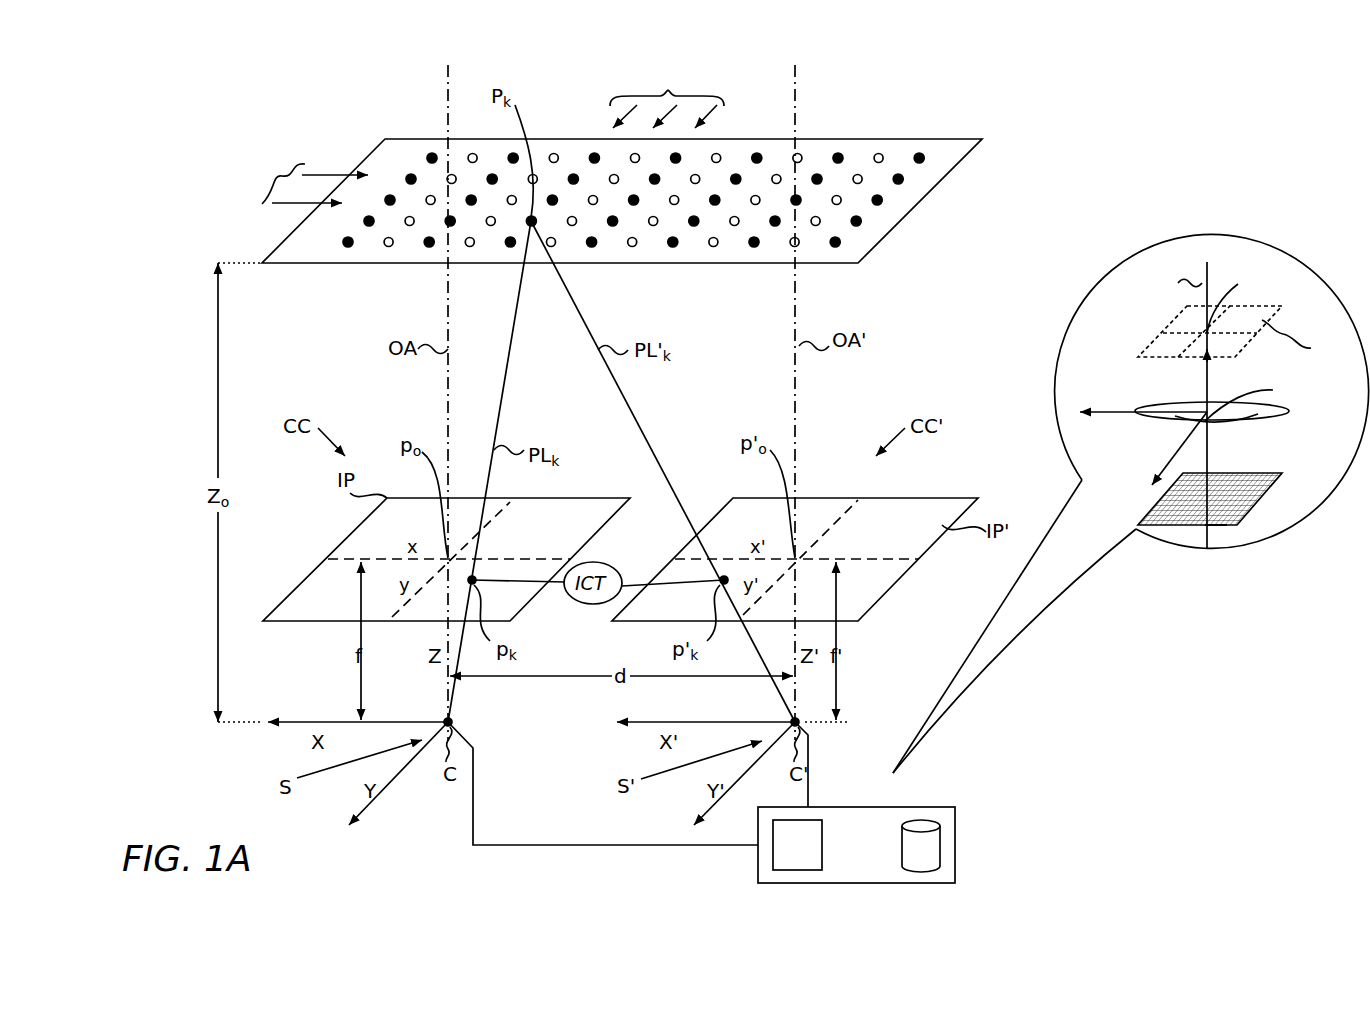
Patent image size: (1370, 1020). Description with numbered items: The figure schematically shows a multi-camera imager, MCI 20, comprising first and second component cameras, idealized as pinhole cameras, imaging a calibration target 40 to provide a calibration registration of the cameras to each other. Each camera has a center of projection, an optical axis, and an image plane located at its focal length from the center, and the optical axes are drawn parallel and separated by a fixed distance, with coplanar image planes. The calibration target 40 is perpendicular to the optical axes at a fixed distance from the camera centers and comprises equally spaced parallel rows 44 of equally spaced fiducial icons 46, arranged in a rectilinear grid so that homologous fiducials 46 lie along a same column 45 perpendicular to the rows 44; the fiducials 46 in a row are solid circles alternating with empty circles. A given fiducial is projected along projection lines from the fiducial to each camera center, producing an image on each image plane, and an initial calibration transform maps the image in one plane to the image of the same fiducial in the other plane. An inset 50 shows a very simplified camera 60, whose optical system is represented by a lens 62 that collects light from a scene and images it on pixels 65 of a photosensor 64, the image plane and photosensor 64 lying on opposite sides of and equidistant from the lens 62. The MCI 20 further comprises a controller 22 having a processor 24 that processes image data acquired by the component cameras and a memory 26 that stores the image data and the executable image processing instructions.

The MCI 20 is at (176, 333).
The controller 22 is at (856, 845).
The processor 24 is at (797, 845).
The memory 26 is at (921, 846).
The calibration target 40 is at (951, 148).
The rows 44 is at (305, 181).
The column 45 is at (667, 95).
The fiducial icons 46 is at (429, 247).
The inset 50 is at (1181, 229).
The camera 60 is at (1120, 312).
The lens 62 is at (1157, 405).
The photosensor 64 is at (1258, 527).
The pixels 65 is at (1222, 527).